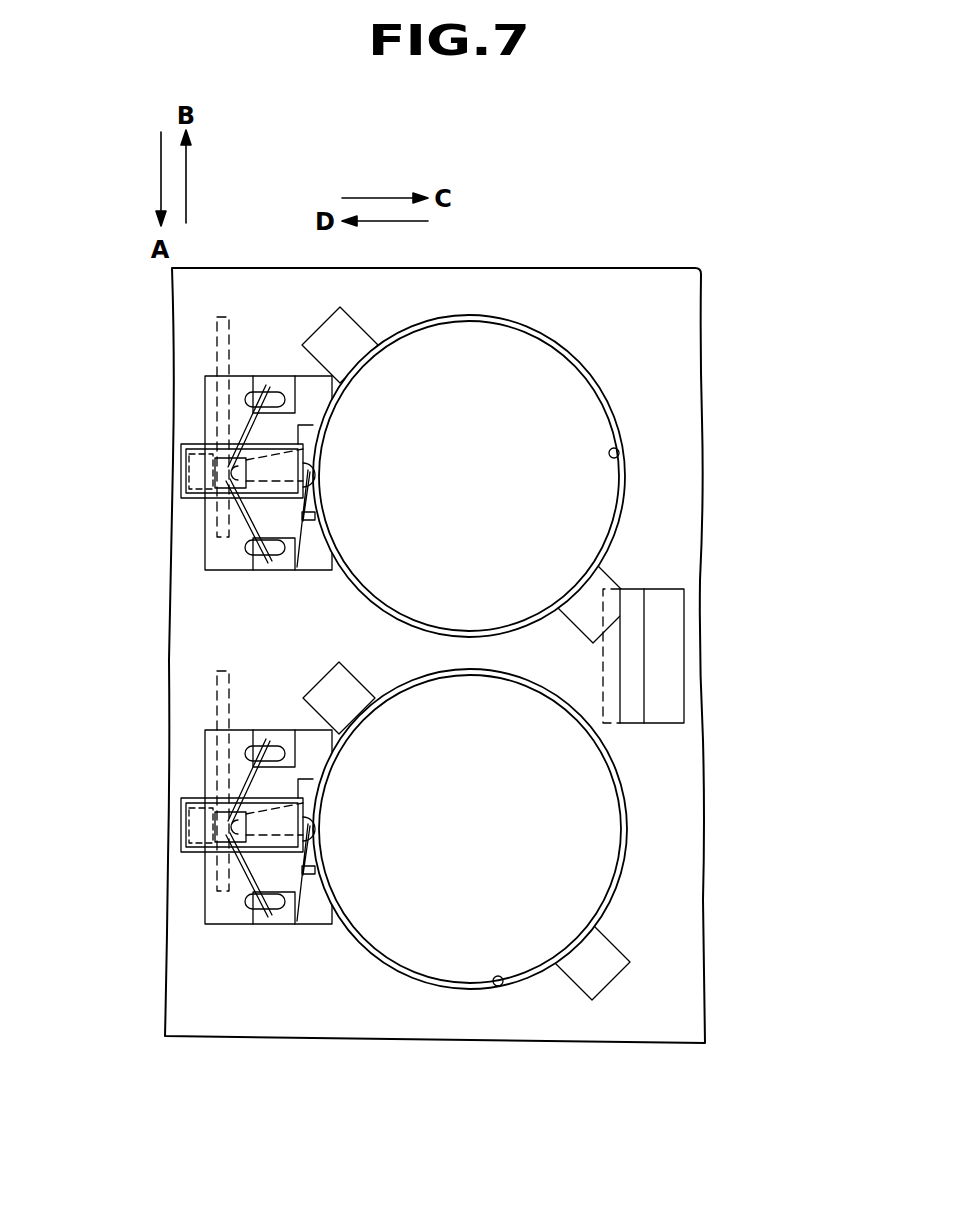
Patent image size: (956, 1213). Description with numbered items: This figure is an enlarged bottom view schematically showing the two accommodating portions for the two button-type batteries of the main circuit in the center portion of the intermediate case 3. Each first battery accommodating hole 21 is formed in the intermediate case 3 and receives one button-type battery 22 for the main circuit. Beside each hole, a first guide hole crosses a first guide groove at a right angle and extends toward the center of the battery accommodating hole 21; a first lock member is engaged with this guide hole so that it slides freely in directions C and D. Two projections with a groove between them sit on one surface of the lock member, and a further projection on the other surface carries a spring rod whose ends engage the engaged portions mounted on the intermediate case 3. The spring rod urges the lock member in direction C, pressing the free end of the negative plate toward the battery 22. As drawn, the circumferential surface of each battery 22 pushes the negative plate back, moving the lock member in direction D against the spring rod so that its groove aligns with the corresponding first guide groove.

The intermediate case 3 is at (603, 262).
The first battery accommodating hole 21 is at (617, 450).
The button-type battery for the main circuit 22 is at (585, 412).